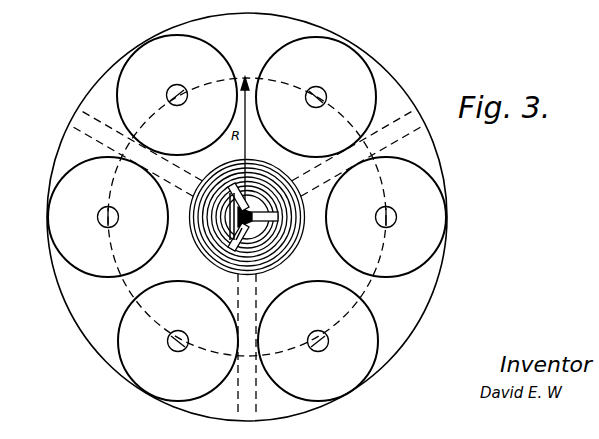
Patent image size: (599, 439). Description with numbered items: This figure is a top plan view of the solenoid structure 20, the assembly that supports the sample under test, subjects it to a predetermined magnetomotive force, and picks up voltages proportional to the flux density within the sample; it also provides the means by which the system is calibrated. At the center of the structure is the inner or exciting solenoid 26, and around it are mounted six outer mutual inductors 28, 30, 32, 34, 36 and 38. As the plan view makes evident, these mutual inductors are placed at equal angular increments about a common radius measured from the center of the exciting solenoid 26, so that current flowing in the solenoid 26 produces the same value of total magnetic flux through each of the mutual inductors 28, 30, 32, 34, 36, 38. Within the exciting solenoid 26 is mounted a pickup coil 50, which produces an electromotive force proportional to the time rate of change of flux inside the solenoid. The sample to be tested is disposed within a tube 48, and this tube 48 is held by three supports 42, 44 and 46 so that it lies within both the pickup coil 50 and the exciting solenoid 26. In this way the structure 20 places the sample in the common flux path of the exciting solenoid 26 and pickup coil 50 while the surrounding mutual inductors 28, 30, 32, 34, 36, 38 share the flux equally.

The solenoid structure 20 is at (422, 323).
The exciting solenoid 26 is at (290, 243).
The mutual inductor 28 is at (428, 237).
The mutual inductor 30 is at (348, 378).
The mutual inductor 32 is at (173, 383).
The mutual inductor 34 is at (72, 240).
The mutual inductor 36 is at (147, 55).
The mutual inductor 38 is at (332, 52).
The support 42 is at (262, 203).
The support 44 is at (229, 212).
The support 46 is at (243, 255).
The tube 48 is at (233, 232).
The pickup coil 50 is at (253, 195).